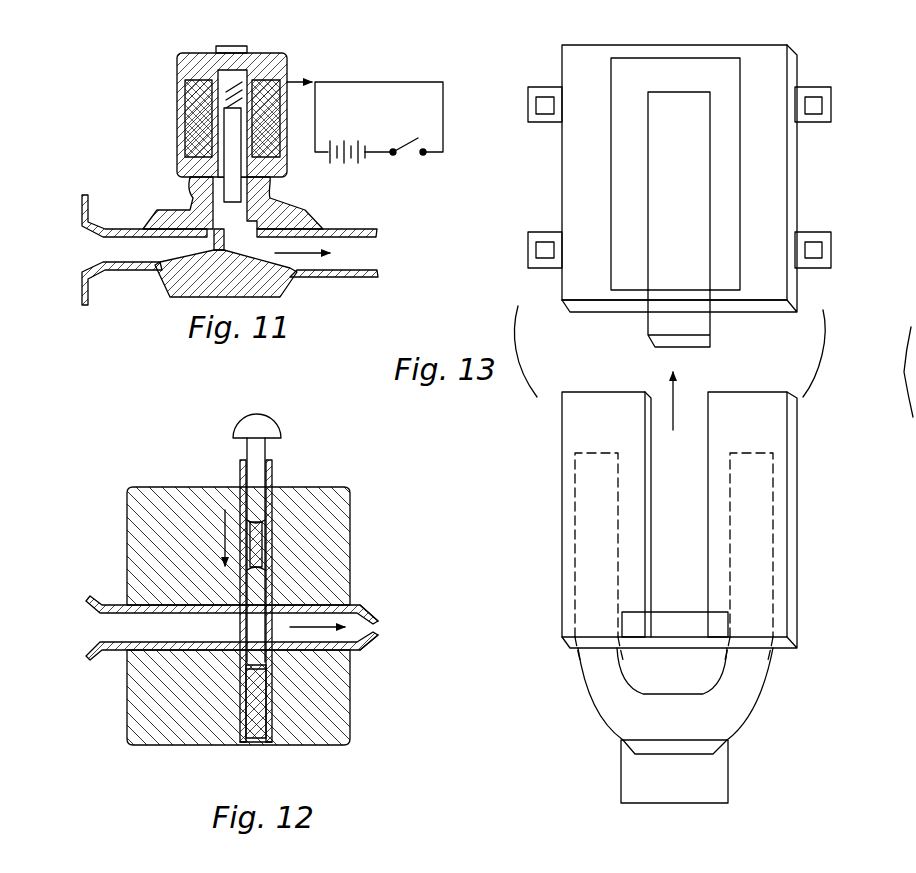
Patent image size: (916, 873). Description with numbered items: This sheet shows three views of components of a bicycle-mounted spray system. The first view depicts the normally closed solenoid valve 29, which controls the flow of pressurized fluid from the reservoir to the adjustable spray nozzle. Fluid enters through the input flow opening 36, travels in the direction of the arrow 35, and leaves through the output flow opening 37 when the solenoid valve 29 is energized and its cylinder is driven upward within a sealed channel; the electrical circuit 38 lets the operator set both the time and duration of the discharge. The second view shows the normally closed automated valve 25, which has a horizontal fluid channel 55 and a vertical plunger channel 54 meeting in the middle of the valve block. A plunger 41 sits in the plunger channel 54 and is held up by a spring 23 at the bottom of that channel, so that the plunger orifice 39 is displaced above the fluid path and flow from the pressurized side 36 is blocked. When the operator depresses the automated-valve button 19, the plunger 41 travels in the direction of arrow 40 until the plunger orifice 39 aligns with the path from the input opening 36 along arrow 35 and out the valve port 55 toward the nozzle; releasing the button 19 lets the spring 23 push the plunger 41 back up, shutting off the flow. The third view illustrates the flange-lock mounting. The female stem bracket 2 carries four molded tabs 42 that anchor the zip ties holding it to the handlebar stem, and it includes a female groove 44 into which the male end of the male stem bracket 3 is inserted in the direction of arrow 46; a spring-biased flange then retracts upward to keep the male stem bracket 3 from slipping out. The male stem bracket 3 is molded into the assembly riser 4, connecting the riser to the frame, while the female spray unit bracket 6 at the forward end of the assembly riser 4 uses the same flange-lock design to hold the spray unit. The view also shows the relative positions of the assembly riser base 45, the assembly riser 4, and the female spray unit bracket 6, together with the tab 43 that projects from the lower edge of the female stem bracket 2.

In FIG. 13, the female stem bracket 2 is at (828, 163).
In FIG. 13, the male stem bracket 3 is at (822, 506).
In FIG. 13, the assembly riser 4 is at (742, 692).
In FIG. 13, the female spray unit bracket 6 is at (728, 783).
In FIG. 12, the automated-valve button 19 is at (240, 425).
In FIG. 12, the spring 23 is at (245, 712).
In FIG. 12, the automated valve 25 is at (344, 440).
In FIG. 11, the normally closed solenoid valve 29 is at (187, 70).
In FIG. 11, the arrow indicating fluid pathway 35 is at (297, 262).
In FIG. 12, the arrow indicating fluid pathway 35 is at (327, 632).
In FIG. 11, the input flow opening 36 is at (120, 246).
In FIG. 12, the input flow opening 36 is at (125, 627).
In FIG. 11, the output flow opening 37 is at (367, 254).
In FIG. 11, the electrical circuit 38 is at (395, 123).
In FIG. 12, the plunger orifice 39 is at (258, 545).
In FIG. 12, the arrow indicating plunger travel direction 40 is at (207, 538).
In FIG. 12, the plunger 41 is at (247, 448).
In FIG. 13, the tabs 42 is at (546, 124).
In FIG. 13, the tab 43 is at (686, 306).
In FIG. 13, the female groove 44 is at (587, 300).
In FIG. 13, the assembly riser base 45 is at (562, 547).
In FIG. 13, the arrow indicating insertion direction 46 is at (673, 392).
In FIG. 12, the plunger channel 54 is at (262, 479).
In FIG. 12, the valve port 55 is at (380, 628).